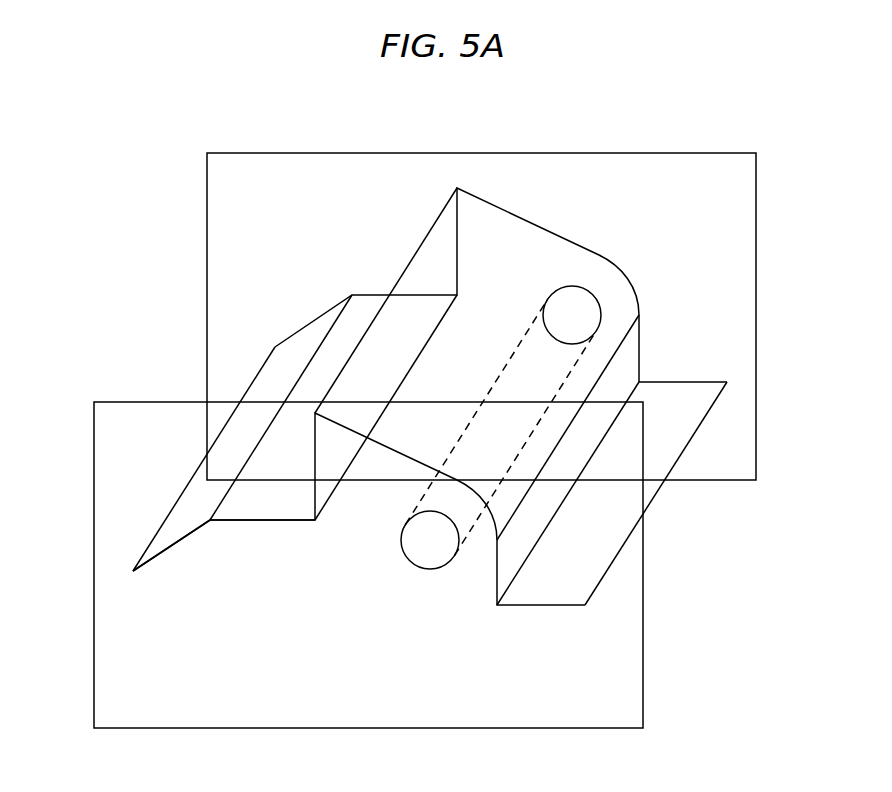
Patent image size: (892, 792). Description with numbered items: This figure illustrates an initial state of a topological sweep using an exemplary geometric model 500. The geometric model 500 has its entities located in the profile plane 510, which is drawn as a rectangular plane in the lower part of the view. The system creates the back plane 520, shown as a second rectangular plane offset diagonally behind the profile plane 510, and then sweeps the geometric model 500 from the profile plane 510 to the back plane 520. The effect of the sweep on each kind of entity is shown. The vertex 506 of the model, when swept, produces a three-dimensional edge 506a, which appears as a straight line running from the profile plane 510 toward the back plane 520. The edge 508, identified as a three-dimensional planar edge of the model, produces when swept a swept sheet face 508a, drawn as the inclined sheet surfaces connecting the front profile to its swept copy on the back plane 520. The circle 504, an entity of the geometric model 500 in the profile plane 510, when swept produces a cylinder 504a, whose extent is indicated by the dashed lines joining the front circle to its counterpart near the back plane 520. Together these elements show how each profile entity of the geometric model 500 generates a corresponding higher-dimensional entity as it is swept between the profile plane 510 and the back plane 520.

The geometric model 500 is at (380, 453).
The circle 504 is at (424, 570).
The cylinder 504a is at (552, 427).
The vertex 506 is at (219, 549).
The 3D edge 506a is at (290, 391).
The edge 508 is at (277, 520).
The swept sheet face 508a is at (337, 351).
The profile plane 510 is at (643, 692).
The back plane 520 is at (756, 298).